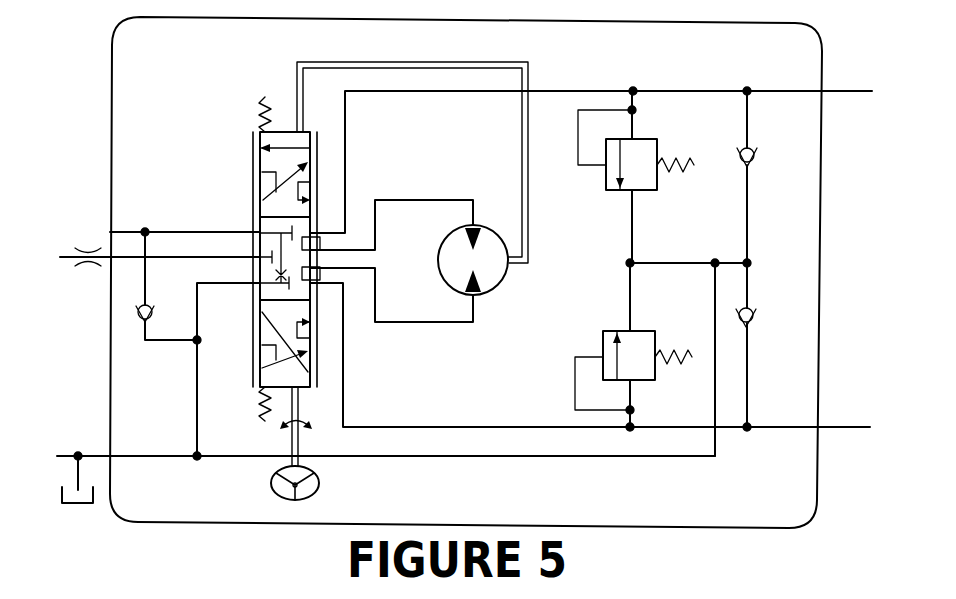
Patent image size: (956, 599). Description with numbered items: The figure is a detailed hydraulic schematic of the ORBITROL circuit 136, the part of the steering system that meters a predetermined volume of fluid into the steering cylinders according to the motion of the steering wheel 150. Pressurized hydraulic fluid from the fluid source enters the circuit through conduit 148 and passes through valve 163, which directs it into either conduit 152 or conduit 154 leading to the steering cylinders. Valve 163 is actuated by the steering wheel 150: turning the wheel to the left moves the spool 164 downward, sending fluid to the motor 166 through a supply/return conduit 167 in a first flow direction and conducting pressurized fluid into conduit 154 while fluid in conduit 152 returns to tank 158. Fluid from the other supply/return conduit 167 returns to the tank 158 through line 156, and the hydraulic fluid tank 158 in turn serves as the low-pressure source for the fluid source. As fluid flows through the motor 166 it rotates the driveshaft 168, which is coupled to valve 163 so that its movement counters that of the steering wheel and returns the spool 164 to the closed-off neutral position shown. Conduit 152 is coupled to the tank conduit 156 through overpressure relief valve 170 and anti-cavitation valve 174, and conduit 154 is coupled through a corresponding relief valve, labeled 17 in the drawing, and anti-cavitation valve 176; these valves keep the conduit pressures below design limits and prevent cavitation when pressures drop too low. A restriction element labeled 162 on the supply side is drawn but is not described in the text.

The ORBITROL circuit 136 is at (70, 344).
The conduit 148 is at (110, 230).
The steering wheel 150 is at (320, 483).
The conduit 152 is at (840, 92).
The conduit 154 is at (800, 427).
The conduit 156 is at (142, 458).
The hydraulic fluid tank 158 is at (68, 505).
The restricted supply line 162 is at (185, 256).
The valve 163 is at (236, 122).
The spool 164 is at (288, 128).
The motor 166 is at (490, 288).
The supply/return conduit 167 is at (400, 200).
The driveshaft 168 is at (455, 66).
The overpressure relief valve 170 is at (645, 140).
The relief valve 17 is at (633, 345).
The anti-cavitation valve 174 is at (752, 150).
The anti-cavitation valve 176 is at (738, 330).